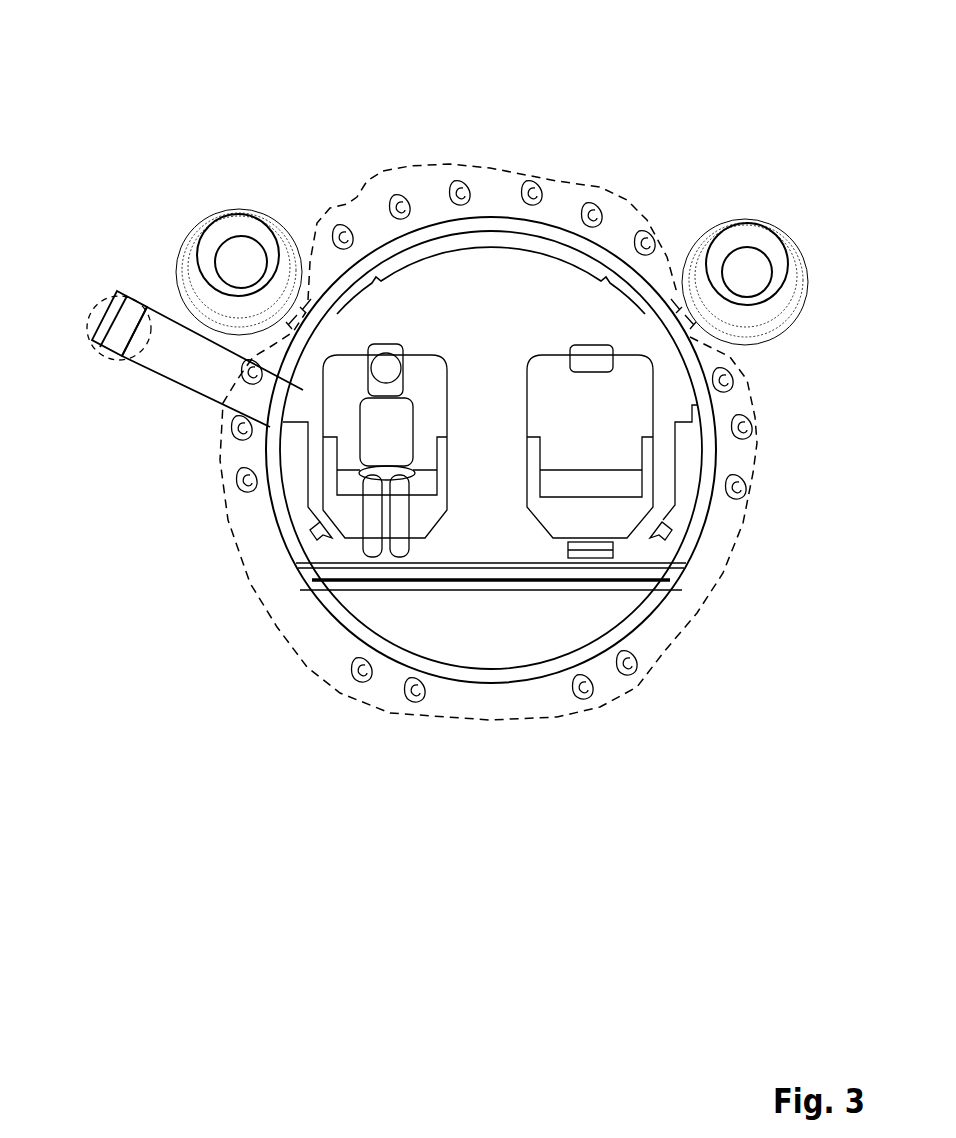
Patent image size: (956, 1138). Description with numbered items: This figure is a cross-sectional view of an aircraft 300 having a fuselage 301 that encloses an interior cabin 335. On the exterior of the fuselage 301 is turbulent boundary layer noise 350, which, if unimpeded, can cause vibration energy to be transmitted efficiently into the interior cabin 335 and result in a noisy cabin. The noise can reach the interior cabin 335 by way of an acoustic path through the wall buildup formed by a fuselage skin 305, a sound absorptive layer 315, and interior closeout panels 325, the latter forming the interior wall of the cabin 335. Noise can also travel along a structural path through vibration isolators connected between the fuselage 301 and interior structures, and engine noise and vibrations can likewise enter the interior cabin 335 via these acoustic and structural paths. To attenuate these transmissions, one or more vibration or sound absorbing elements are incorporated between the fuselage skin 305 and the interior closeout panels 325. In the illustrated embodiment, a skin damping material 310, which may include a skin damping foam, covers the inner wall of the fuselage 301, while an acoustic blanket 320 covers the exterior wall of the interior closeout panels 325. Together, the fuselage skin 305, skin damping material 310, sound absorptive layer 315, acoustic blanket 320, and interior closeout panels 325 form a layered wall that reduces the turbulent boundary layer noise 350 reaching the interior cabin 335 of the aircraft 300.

The aircraft 300 is at (322, 78).
The fuselage 301 is at (293, 559).
The fuselage skin 305 is at (110, 295).
The skin damping material 310 is at (117, 290).
The sound absorptive layer 315 is at (106, 352).
The acoustic blanket 320 is at (147, 307).
The interior closeout panels 325 is at (122, 356).
The interior cabin 335 is at (494, 288).
The turbulent boundary layer noise 350 is at (352, 690).